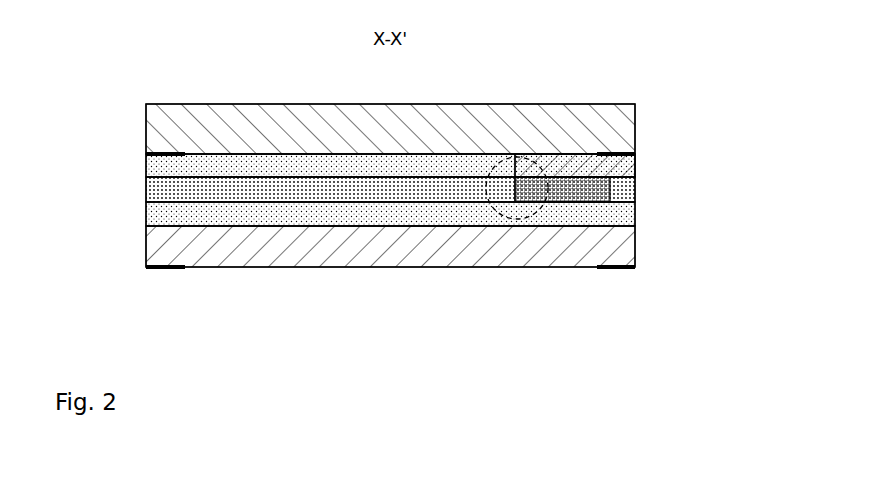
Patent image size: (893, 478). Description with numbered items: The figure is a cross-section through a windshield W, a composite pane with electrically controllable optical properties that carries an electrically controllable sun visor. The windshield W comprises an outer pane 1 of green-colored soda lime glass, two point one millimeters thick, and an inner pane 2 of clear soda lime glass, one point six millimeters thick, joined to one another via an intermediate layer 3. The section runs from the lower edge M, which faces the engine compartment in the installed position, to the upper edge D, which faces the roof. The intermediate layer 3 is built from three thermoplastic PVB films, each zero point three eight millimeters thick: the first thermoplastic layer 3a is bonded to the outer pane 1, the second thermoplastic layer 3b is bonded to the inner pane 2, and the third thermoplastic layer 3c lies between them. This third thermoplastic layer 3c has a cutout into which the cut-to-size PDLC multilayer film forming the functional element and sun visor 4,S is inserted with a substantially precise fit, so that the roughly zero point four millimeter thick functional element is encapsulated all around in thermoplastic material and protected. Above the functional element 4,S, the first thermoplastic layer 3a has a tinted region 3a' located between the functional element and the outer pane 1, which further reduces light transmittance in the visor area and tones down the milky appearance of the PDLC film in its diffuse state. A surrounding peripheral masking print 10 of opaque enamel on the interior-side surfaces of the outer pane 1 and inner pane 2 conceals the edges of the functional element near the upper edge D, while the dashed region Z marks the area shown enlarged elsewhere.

The outer pane 1 is at (212, 104).
The inner pane 2 is at (212, 268).
The intermediate layer 3 is at (393, 204).
The first thermoplastic layer 3a is at (367, 167).
The third thermoplastic layer 3c is at (160, 192).
The second thermoplastic layer 3b is at (608, 215).
The tinted region 3a' is at (624, 178).
The functional element / sun visor 4,S is at (608, 192).
The masking print 10 is at (636, 155).
The lower edge M is at (140, 127).
The upper edge D is at (642, 126).
The windshield W is at (580, 84).
The region Z is at (528, 222).